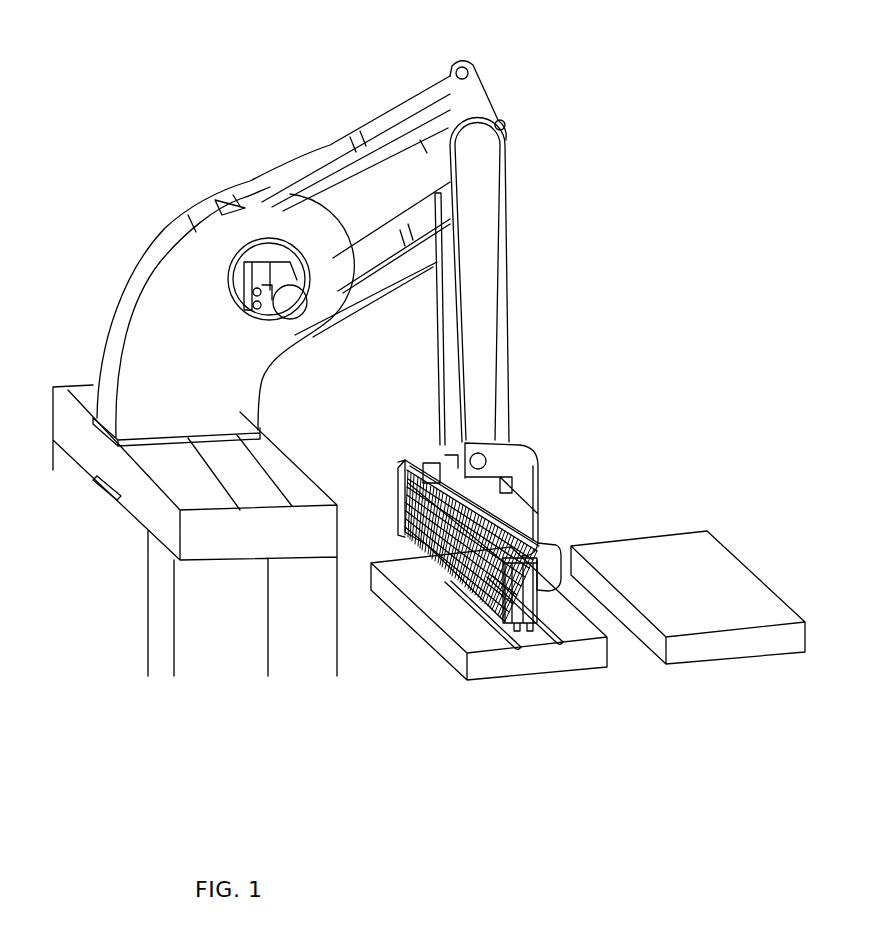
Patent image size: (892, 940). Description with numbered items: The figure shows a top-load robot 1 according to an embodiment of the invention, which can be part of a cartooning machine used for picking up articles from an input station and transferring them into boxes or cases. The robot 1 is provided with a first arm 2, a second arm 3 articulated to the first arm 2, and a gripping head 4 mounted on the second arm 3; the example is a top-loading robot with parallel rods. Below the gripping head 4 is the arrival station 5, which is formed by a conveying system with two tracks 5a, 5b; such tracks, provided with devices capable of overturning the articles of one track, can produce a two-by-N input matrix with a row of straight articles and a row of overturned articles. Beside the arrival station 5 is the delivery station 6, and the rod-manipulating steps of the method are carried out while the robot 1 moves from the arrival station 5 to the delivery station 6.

The robot 1 is at (325, 387).
The first arm 2 is at (372, 200).
The second arm 3 is at (482, 264).
The gripping head 4 is at (462, 605).
The arrival station 5 is at (508, 689).
The track 5a is at (517, 645).
The track 5b is at (553, 638).
The delivery station 6 is at (709, 670).